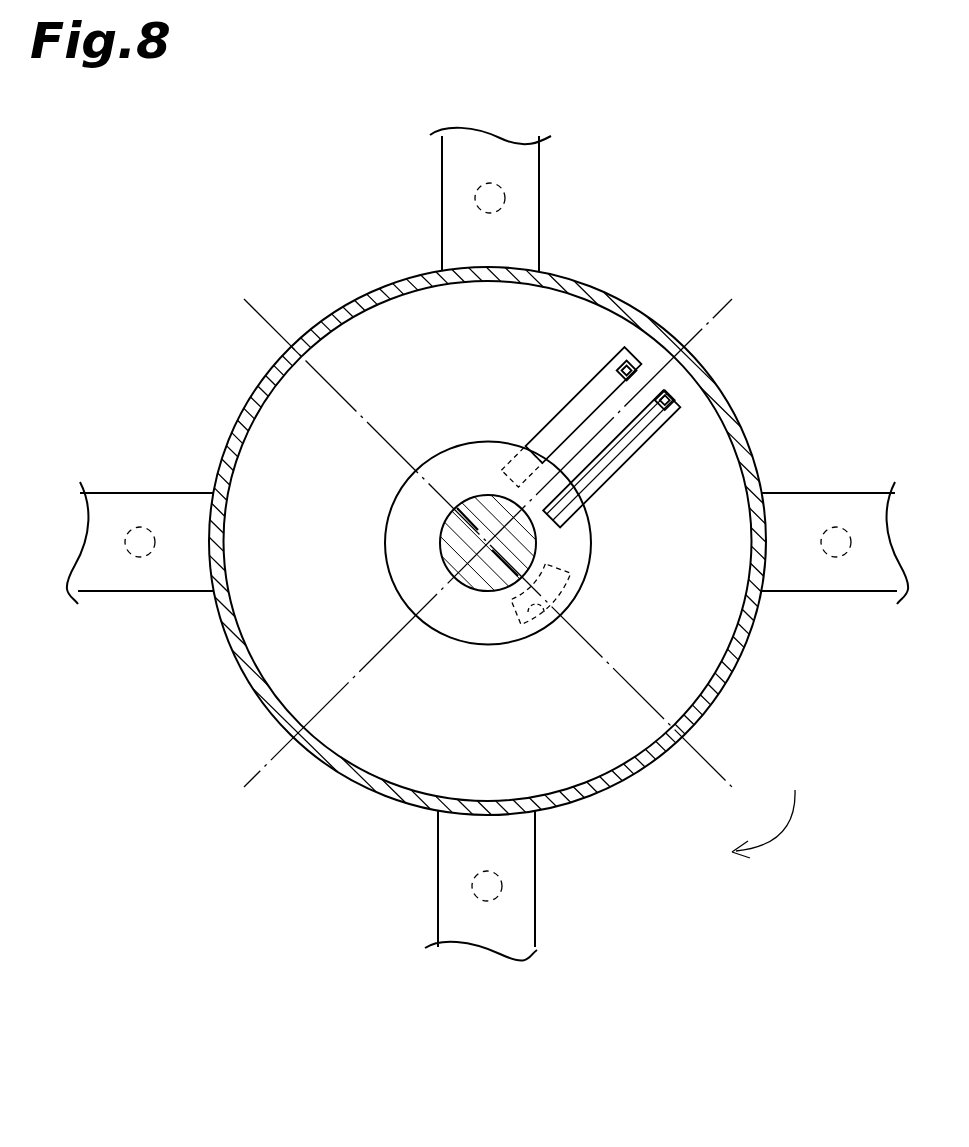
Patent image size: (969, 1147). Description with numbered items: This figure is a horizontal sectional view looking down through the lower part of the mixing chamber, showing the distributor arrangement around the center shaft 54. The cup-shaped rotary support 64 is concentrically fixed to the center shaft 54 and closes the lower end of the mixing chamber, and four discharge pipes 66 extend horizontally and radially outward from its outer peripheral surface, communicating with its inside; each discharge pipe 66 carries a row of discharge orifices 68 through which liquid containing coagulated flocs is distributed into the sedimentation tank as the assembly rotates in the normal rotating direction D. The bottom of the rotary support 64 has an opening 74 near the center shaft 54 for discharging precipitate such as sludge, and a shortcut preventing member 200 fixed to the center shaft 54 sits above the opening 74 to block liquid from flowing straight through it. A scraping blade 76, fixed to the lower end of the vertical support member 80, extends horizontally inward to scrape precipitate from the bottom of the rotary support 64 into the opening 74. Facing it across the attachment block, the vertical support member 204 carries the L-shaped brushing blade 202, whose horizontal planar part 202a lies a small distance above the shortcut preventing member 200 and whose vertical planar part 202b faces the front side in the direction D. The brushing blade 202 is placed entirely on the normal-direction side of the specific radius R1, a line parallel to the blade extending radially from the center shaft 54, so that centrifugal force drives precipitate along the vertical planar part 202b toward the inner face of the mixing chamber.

The center shaft 54 is at (441, 543).
The rotary support 64 is at (632, 770).
The discharge pipes 66 is at (456, 186).
The discharge orifices 68 is at (505, 193).
The opening 74 is at (538, 622).
The scraping blade 76 is at (566, 421).
The support member 80 is at (636, 356).
The shortcut preventing member 200 is at (460, 648).
The brushing blade 202 is at (638, 479).
The horizontal planar part 202a is at (592, 487).
The vertical planar part 202b is at (616, 472).
The support member 204 is at (678, 410).
The specific radius R1 is at (728, 306).
The normal rotating direction D is at (781, 826).